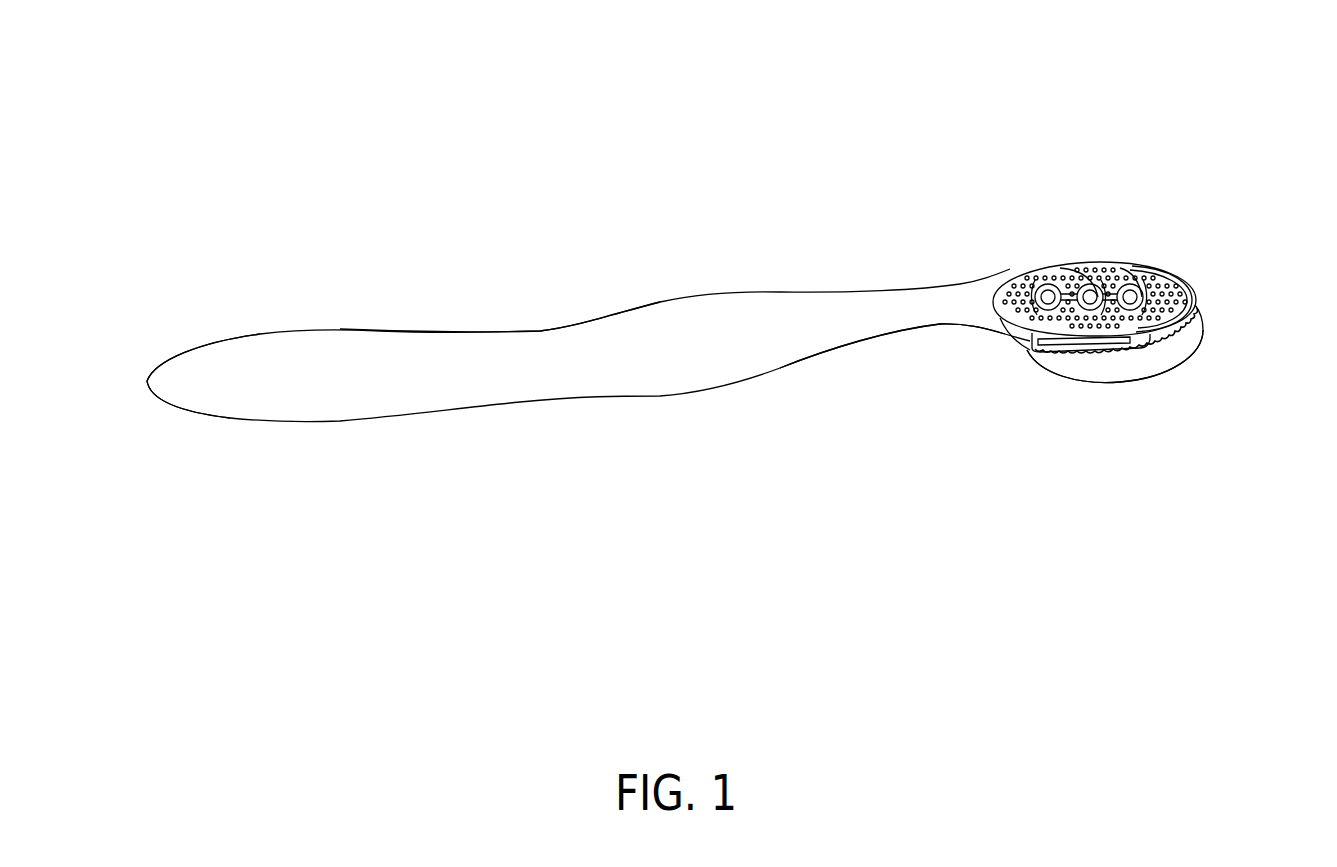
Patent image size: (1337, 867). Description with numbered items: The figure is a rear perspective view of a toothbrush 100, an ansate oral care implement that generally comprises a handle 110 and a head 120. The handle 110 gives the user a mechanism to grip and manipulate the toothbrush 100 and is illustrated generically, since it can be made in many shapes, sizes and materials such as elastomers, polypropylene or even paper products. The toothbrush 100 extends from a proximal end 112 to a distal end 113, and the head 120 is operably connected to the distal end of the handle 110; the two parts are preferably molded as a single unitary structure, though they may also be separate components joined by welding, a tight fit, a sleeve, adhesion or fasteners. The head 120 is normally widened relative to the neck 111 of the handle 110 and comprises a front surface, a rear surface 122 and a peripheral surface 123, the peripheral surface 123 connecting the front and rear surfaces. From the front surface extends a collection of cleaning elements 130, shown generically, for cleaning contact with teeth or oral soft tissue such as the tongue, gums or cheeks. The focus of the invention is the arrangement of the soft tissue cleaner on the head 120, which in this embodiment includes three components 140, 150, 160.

The toothbrush 100 is at (312, 112).
The handle 110 is at (583, 323).
The neck 111 is at (944, 323).
The proximal end 112 is at (147, 381).
The distal end 113 is at (1197, 303).
The head 120 is at (1083, 365).
The rear surface 122 is at (1020, 272).
The peripheral surface 123 is at (1030, 340).
The collection of cleaning elements 130 is at (1205, 325).
The soft tissue cleaner component 140 is at (1073, 262).
The soft tissue cleaner component 150 is at (1143, 350).
The soft tissue cleaner component 160 is at (1143, 262).